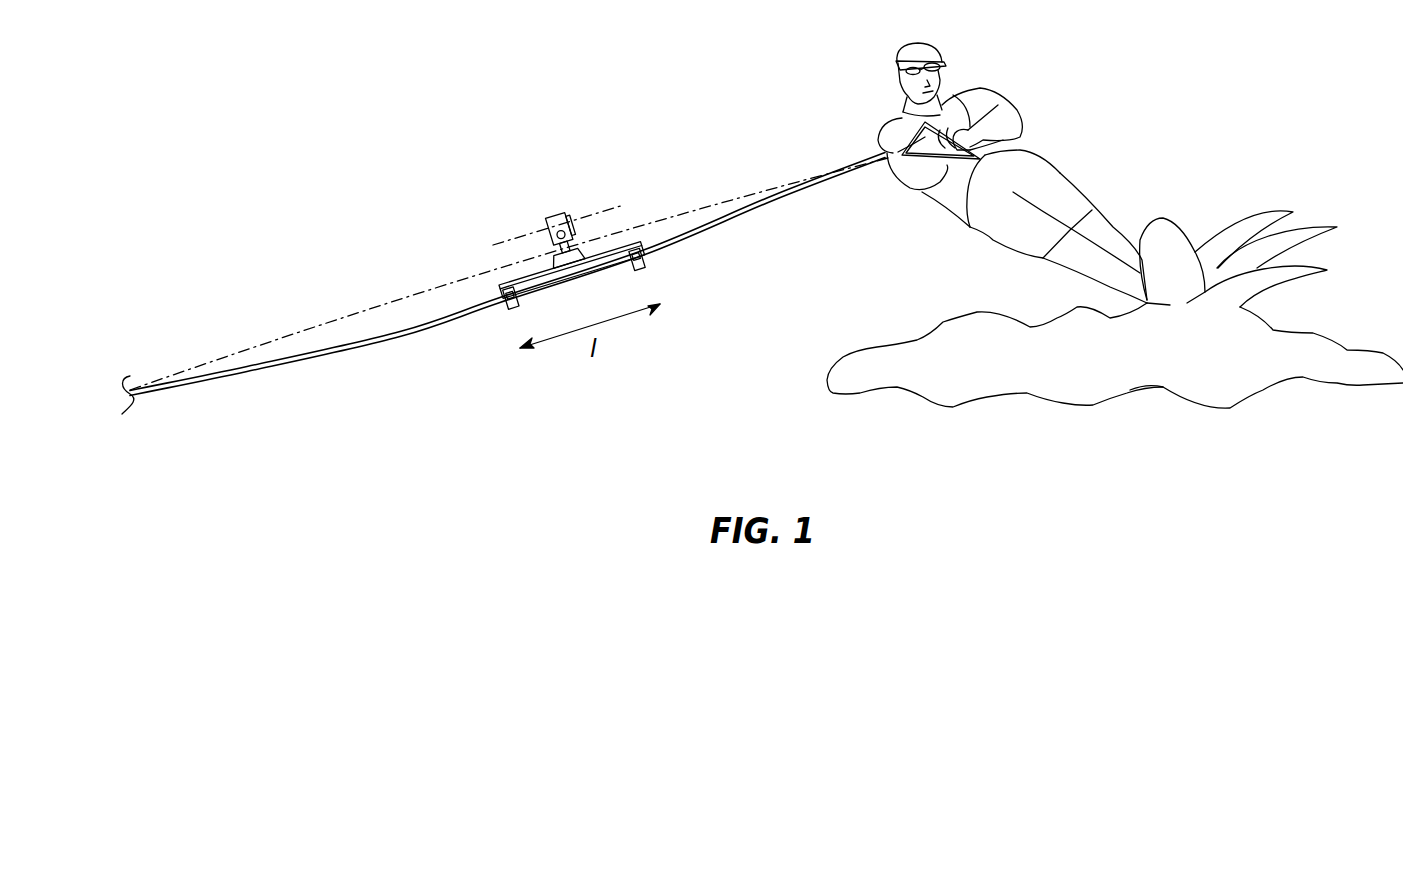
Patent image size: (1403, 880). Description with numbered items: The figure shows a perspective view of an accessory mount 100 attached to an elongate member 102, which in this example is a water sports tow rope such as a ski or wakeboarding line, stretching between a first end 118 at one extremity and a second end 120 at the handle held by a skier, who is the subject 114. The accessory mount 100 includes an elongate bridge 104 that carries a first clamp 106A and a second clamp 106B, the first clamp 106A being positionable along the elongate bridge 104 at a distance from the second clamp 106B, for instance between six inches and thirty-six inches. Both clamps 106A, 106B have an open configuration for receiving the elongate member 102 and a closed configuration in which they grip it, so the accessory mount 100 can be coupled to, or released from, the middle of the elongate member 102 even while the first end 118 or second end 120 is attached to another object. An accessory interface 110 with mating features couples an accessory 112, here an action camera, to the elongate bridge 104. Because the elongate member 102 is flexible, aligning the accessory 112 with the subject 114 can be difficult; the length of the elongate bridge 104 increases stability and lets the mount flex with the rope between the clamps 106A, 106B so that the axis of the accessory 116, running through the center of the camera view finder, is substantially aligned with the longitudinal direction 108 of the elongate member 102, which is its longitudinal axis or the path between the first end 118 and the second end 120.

The accessory mount 100 is at (358, 86).
The elongate member 102 is at (340, 351).
The elongate bridge 104 is at (518, 280).
The first clamp 106A is at (511, 318).
The second clamp 106B is at (648, 270).
The longitudinal direction 108 is at (367, 311).
The accessory interface 110 is at (580, 270).
The accessory 112 is at (550, 212).
The subject 114 is at (975, 93).
The axis of the accessory 116 is at (529, 240).
The first end 118 is at (121, 404).
The second end 120 is at (894, 133).